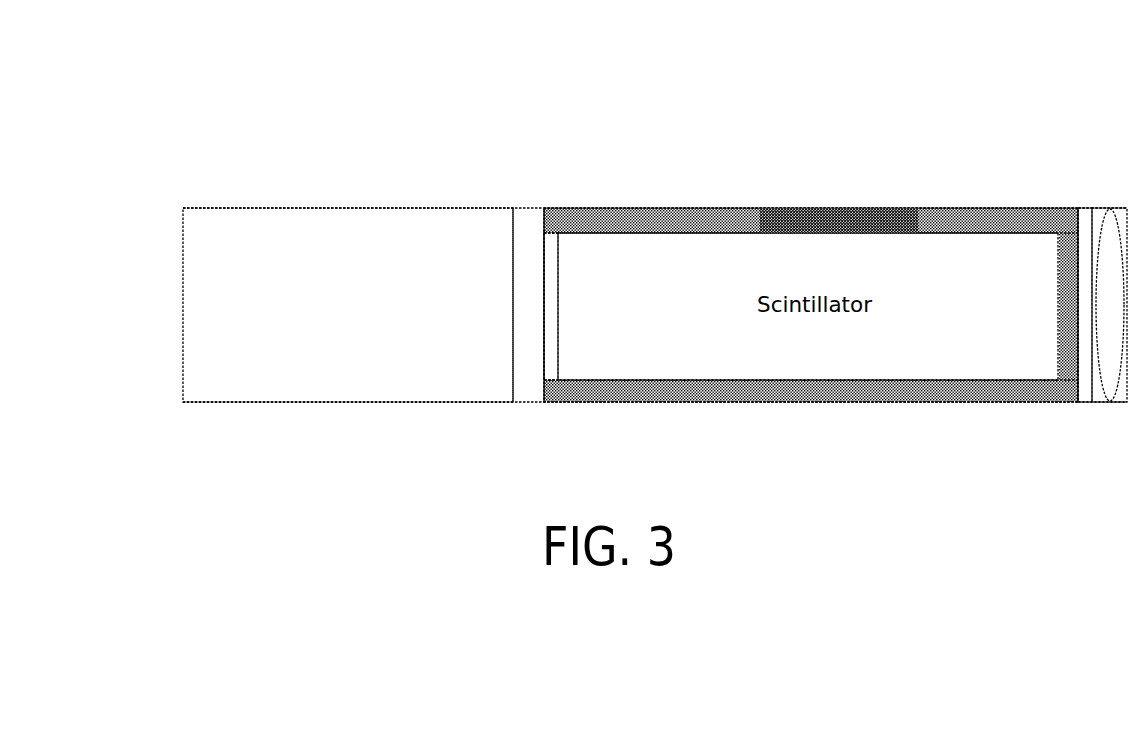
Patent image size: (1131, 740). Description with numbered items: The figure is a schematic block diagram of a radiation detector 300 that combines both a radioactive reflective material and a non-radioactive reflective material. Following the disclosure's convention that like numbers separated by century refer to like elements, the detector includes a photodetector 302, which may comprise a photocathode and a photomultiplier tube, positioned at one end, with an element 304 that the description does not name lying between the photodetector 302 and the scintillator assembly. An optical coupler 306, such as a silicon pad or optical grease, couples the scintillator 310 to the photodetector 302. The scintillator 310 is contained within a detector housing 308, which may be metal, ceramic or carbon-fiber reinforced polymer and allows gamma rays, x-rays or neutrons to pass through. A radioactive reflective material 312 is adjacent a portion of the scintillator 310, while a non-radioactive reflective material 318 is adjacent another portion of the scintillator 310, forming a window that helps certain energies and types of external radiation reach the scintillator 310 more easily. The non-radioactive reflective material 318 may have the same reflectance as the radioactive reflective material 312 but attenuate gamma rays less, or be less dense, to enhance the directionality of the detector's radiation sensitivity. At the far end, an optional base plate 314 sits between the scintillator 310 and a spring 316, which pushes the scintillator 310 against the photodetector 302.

The radiation detector 300 is at (307, 53).
The photodetector 302 is at (214, 208).
The optical coupling 304 is at (530, 390).
The optical coupler 306 is at (552, 297).
The detector housing 308 is at (975, 208).
The scintillator 310 is at (723, 232).
The radioactive reflective material 312 is at (795, 393).
The base plate 314 is at (1088, 220).
The spring 316 is at (1113, 382).
The non-radioactive reflective material 318 is at (832, 208).